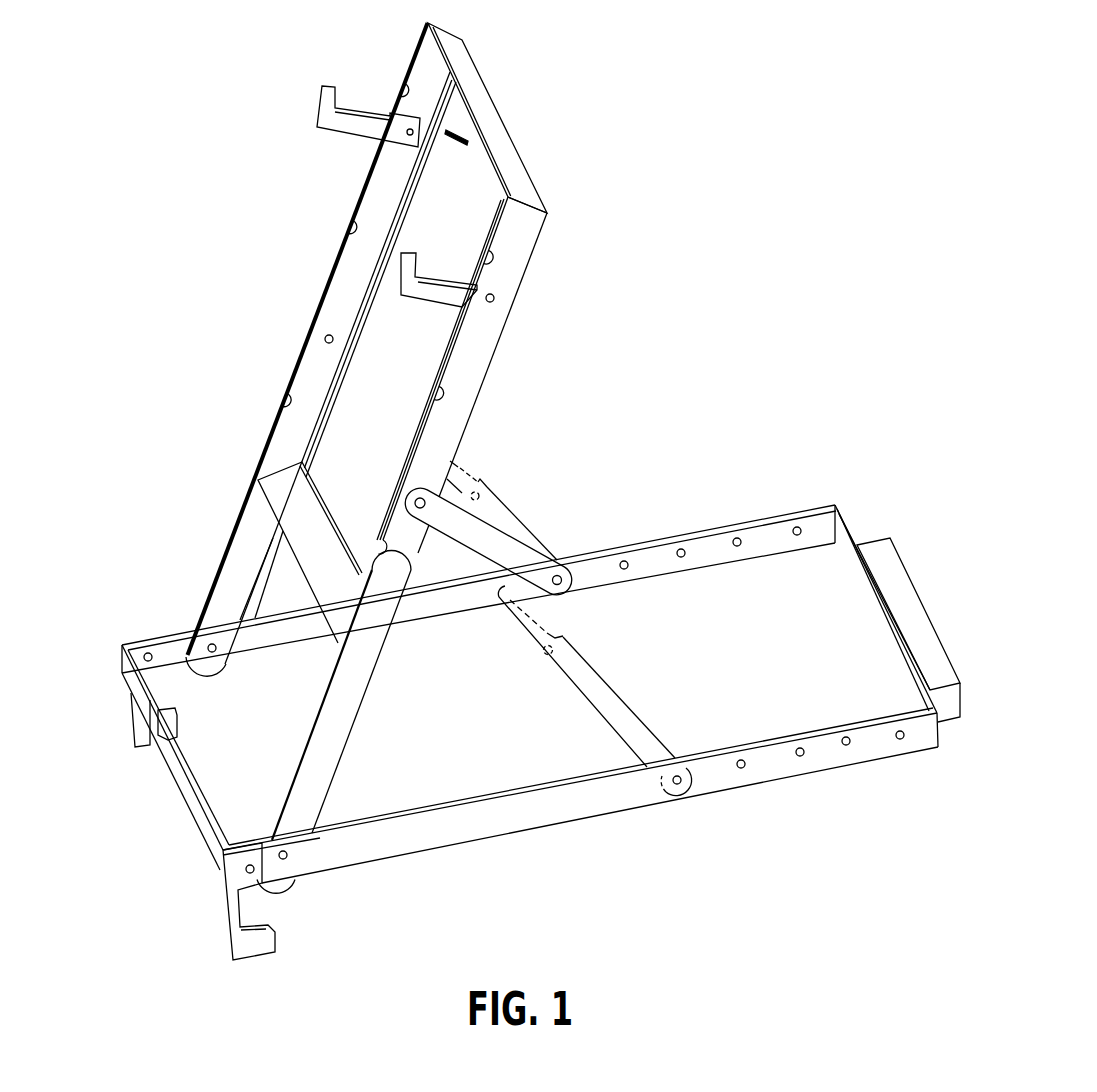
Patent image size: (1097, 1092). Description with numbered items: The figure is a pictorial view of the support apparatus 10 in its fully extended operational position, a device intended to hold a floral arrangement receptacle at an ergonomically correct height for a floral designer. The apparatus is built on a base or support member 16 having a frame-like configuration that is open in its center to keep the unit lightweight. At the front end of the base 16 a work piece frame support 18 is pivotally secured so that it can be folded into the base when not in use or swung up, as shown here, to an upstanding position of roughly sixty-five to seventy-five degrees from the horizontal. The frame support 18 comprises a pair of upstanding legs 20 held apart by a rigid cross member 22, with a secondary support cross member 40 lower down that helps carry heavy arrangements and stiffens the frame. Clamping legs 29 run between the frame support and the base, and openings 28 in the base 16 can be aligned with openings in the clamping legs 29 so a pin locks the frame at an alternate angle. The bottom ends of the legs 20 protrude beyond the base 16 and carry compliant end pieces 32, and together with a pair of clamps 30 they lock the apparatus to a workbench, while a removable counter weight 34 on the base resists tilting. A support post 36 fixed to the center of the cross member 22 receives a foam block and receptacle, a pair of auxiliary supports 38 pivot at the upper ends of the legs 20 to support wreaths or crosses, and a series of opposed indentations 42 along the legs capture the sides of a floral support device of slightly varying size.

The support apparatus 10 is at (673, 93).
The base or support member 16 is at (678, 513).
The work piece frame support 18 is at (280, 336).
The upstanding legs 20 is at (413, 62).
The cross member 22 is at (488, 189).
The openings 28 is at (838, 750).
The clamping legs 29 is at (506, 524).
The clamps 30 is at (124, 698).
The end pieces 32 is at (208, 686).
The counter weight 34 is at (914, 609).
The support post 36 is at (468, 126).
The auxiliary supports 38 is at (327, 134).
The secondary support cross member 40 is at (306, 504).
The indentations 42 is at (404, 84).